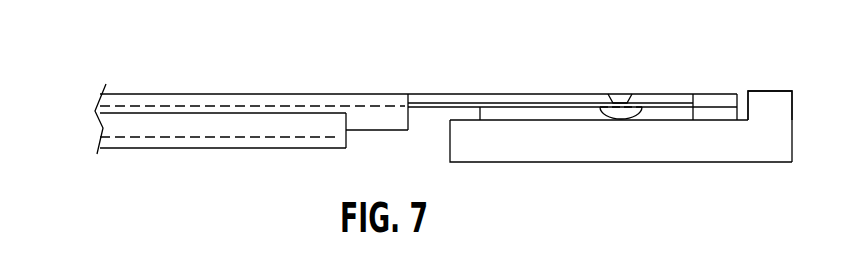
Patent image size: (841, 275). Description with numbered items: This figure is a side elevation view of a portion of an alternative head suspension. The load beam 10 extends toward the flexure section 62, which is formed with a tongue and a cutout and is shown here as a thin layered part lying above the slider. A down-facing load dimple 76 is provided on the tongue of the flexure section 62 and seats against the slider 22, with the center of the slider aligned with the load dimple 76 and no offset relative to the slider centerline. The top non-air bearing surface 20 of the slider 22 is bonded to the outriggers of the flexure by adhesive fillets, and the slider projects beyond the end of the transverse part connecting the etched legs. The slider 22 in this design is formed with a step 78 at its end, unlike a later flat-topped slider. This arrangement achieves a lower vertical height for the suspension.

The load beam 10 is at (340, 86).
The flexure section 62 is at (512, 86).
The load dimple 76 is at (622, 113).
The top non-air bearing surface 20 is at (553, 120).
The slider 22 is at (738, 145).
The step 78 is at (763, 100).